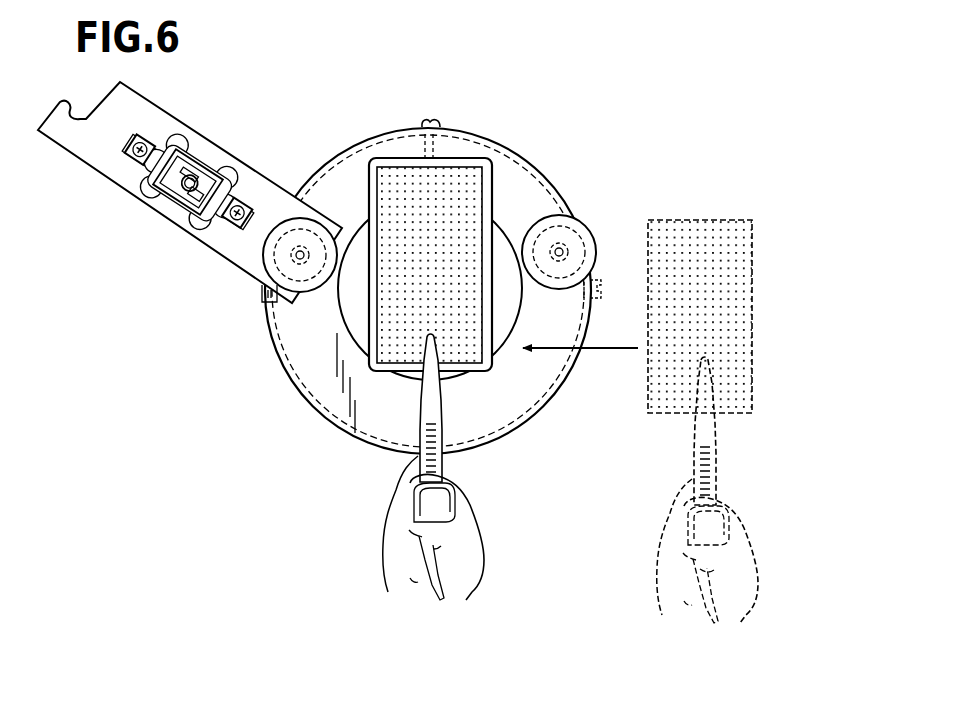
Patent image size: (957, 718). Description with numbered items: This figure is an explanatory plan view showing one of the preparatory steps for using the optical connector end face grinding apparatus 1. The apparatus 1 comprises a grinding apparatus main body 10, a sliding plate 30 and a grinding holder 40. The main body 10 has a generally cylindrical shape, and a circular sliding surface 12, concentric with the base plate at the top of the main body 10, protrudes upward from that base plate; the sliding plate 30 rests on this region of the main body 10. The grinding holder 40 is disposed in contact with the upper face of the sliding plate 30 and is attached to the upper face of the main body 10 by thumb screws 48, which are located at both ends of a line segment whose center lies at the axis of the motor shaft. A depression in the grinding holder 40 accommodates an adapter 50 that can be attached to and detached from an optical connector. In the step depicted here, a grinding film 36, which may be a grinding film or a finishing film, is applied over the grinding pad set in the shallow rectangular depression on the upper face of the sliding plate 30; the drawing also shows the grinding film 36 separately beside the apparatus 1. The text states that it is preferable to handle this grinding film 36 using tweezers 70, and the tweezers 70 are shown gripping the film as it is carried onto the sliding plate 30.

The optical connector end face grinding apparatus 1 is at (423, 282).
The grinding apparatus main body 10 is at (331, 422).
The circular sliding surface 12 is at (347, 308).
The sliding plate 30 is at (460, 153).
The grinding film 36 is at (470, 200).
The grinding holder 40 is at (117, 195).
The thumb screws 48 is at (270, 255).
The adapter 50 is at (182, 214).
The tweezers 70 is at (437, 408).